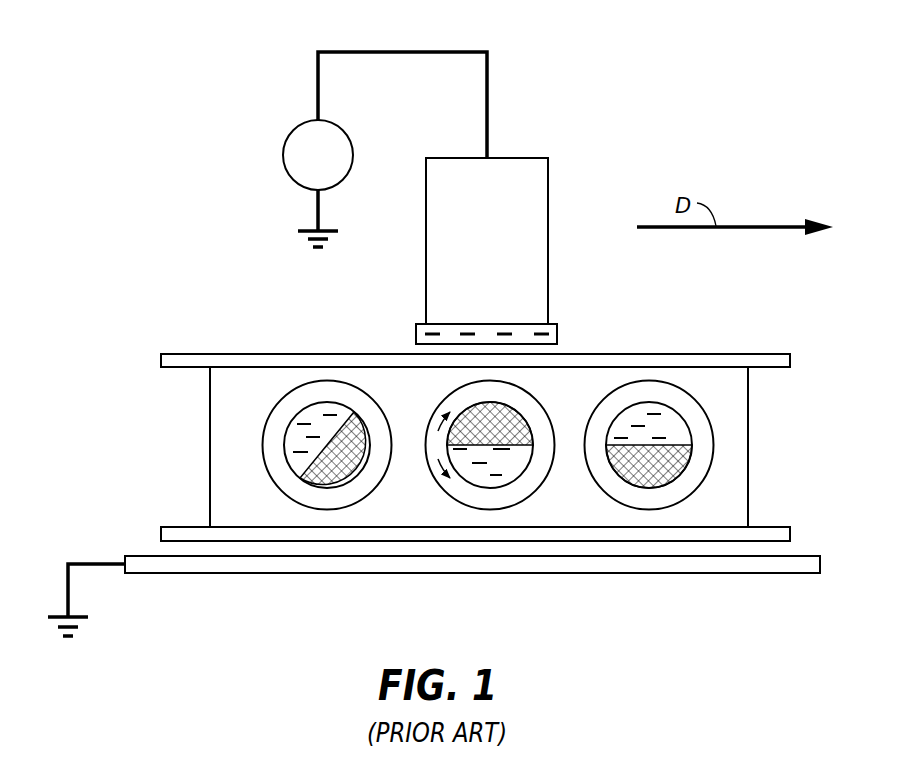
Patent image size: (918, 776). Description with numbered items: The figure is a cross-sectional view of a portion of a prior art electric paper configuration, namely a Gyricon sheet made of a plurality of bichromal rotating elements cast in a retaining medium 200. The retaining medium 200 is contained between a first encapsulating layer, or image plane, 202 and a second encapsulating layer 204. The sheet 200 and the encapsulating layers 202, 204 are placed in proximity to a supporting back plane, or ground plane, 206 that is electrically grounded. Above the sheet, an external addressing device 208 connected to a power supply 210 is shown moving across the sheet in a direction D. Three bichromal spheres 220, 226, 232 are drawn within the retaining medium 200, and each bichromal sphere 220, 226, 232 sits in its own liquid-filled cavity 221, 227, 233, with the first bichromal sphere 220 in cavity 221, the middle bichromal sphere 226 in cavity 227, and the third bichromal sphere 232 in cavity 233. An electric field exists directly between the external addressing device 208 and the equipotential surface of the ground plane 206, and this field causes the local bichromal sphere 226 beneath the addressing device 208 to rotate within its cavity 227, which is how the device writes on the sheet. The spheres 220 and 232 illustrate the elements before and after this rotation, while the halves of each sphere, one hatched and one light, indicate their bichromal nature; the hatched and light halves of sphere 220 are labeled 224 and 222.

The retaining medium 200 is at (209, 462).
The first encapsulating layer 202 is at (162, 360).
The second encapsulating layer 204 is at (162, 532).
The supporting back plane 206 is at (173, 570).
The external addressing device 208 is at (549, 172).
The power supply 210 is at (299, 147).
The bichromal sphere 220 is at (283, 468).
The liquid-filled cavity 221 is at (306, 392).
The first hemisphere (light) 222 is at (300, 463).
The second hemisphere (hatched) 224 is at (318, 482).
The bichromal sphere 226 is at (541, 417).
The liquid-filled cavity 227 is at (544, 452).
The bichromal sphere 232 is at (701, 414).
The liquid-filled cavity 233 is at (698, 426).